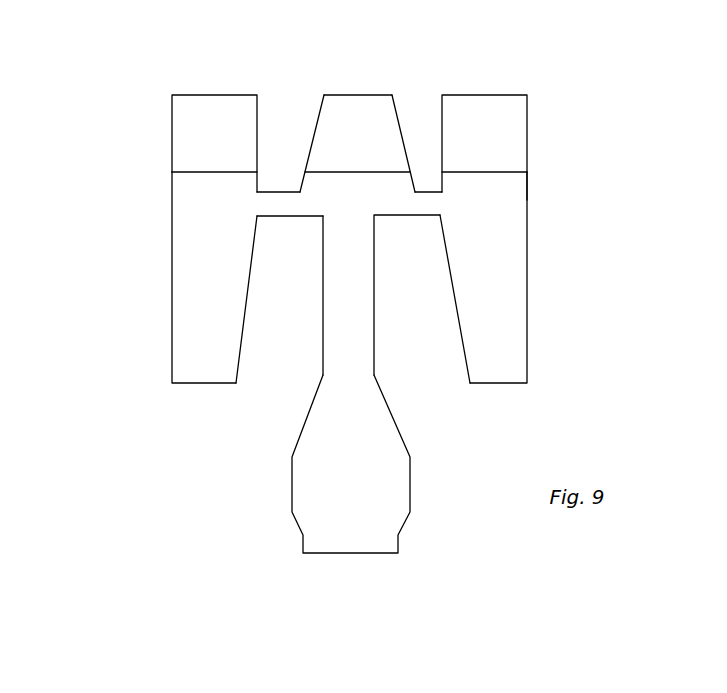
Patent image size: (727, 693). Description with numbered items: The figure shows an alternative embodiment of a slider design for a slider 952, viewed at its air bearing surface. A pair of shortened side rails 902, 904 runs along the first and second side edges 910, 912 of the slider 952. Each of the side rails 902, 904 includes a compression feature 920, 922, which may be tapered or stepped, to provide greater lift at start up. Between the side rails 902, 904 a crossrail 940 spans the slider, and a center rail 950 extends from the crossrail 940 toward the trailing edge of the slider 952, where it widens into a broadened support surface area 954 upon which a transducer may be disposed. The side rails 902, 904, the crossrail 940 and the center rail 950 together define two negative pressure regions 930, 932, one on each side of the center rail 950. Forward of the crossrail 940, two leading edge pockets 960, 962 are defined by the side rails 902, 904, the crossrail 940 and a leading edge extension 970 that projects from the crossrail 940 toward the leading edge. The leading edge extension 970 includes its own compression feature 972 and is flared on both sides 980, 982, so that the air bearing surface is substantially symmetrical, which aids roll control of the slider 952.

The side rail 902 is at (185, 243).
The side rail 904 is at (513, 300).
The first side edge 910 is at (113, 193).
The second side edge 912 is at (545, 195).
The compression feature 920 is at (183, 118).
The compression feature 922 is at (513, 115).
The negative pressure region 930 is at (283, 363).
The negative pressure region 932 is at (420, 350).
The crossrail 940 is at (287, 210).
The center rail 950 is at (333, 282).
The slider 952 is at (328, 291).
The broadened support surface area 954 is at (400, 482).
The leading edge pocket 960 is at (282, 92).
The leading edge pocket 962 is at (420, 95).
The leading edge extension 970 is at (356, 99).
The compression feature 972 is at (364, 104).
The flared side 980 is at (313, 143).
The flared side 982 is at (405, 143).